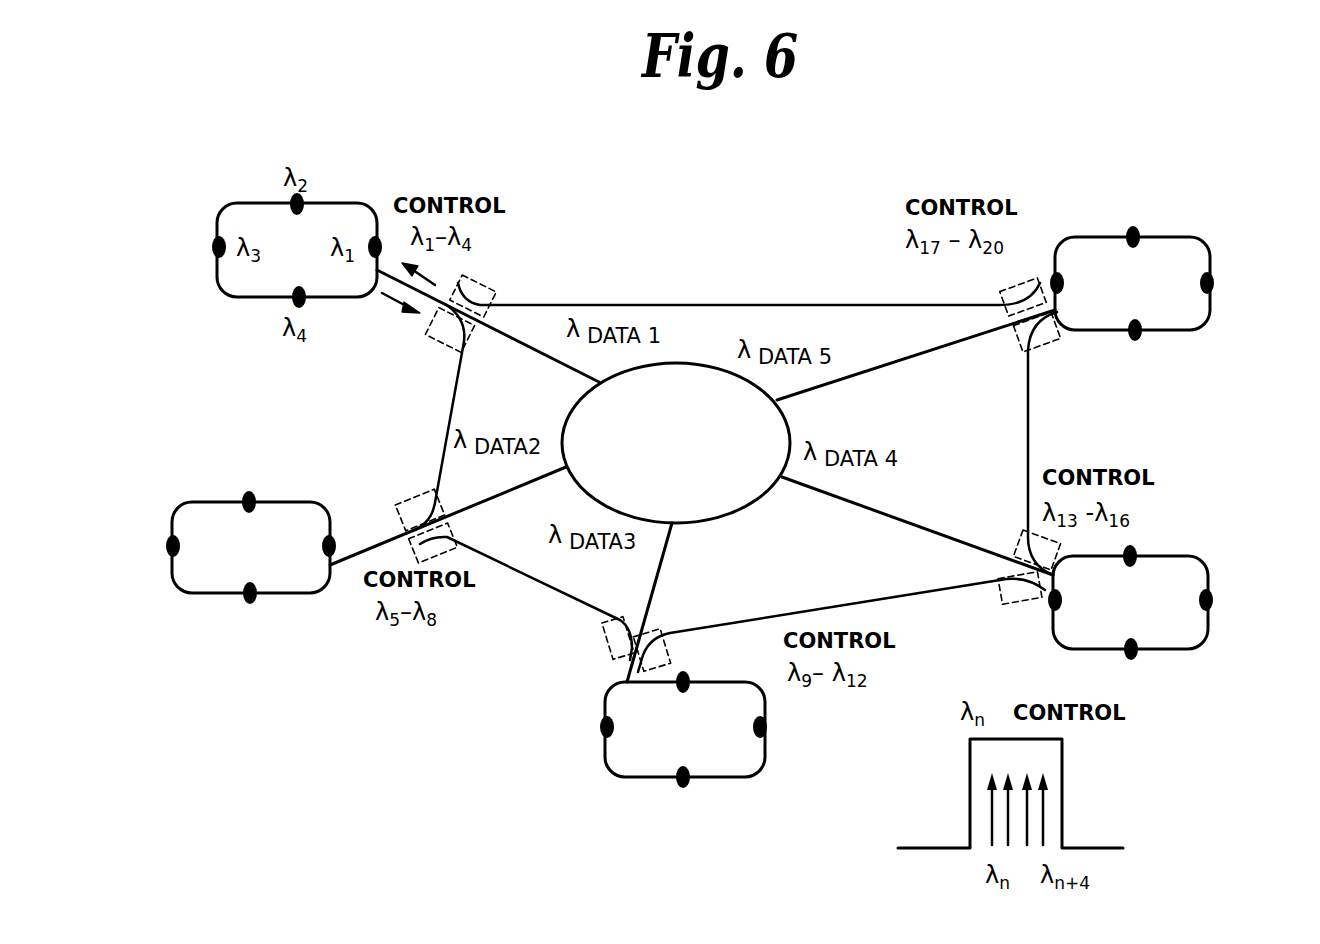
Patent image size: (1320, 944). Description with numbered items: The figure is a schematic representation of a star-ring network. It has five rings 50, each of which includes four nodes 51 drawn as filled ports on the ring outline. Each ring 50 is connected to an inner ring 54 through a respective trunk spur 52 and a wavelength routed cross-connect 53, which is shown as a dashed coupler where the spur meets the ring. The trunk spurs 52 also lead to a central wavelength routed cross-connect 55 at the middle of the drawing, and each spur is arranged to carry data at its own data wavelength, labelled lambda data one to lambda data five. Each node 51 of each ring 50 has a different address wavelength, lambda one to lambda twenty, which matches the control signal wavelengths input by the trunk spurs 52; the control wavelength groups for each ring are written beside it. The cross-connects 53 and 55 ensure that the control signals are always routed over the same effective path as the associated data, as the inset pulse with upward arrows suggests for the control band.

The ring 50 is at (352, 192).
The node 51 is at (216, 247).
The trunk spur 52 is at (522, 352).
The wavelength routed cross-connect 53 is at (450, 338).
The inner ring 54 is at (1030, 428).
The central wavelength routed cross-connect 55 is at (752, 486).